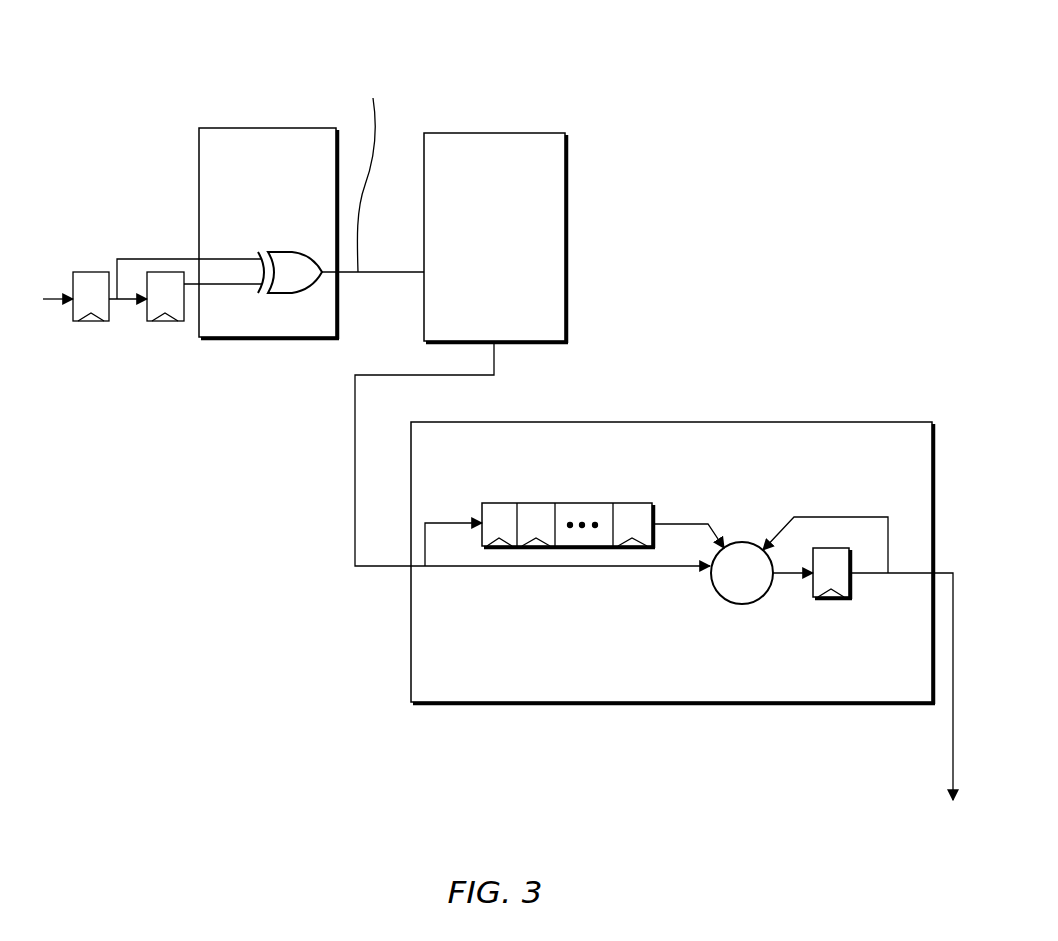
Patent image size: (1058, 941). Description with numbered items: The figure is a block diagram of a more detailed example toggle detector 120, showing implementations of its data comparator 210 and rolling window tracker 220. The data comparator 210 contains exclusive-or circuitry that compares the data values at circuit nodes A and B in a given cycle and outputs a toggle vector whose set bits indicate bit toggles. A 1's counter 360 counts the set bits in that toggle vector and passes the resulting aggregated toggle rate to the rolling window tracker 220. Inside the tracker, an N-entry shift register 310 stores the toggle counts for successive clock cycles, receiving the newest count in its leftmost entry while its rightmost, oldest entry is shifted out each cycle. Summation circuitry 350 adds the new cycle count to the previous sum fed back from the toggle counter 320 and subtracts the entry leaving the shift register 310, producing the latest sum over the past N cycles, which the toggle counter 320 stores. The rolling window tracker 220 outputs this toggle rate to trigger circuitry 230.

The toggle detector 120 is at (807, 108).
The data comparator 210 is at (248, 212).
The 1's counter circuitry 360 is at (477, 263).
The rolling window tracker 220 is at (682, 452).
The N-entry shift register 310 is at (616, 515).
The summation circuitry 350 is at (740, 605).
The toggle counter 320 is at (825, 599).
The trigger circuitry 230 is at (900, 716).